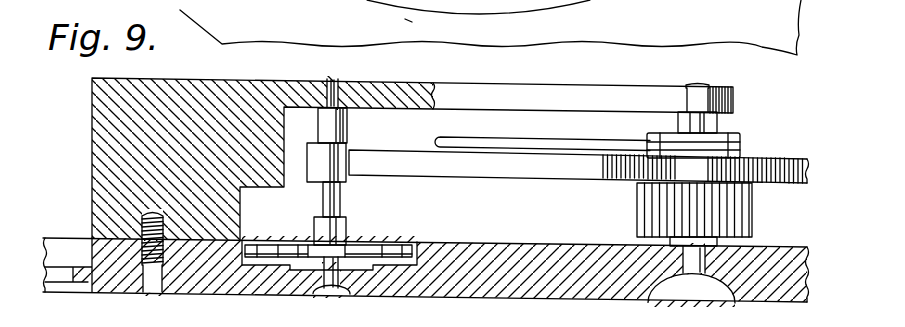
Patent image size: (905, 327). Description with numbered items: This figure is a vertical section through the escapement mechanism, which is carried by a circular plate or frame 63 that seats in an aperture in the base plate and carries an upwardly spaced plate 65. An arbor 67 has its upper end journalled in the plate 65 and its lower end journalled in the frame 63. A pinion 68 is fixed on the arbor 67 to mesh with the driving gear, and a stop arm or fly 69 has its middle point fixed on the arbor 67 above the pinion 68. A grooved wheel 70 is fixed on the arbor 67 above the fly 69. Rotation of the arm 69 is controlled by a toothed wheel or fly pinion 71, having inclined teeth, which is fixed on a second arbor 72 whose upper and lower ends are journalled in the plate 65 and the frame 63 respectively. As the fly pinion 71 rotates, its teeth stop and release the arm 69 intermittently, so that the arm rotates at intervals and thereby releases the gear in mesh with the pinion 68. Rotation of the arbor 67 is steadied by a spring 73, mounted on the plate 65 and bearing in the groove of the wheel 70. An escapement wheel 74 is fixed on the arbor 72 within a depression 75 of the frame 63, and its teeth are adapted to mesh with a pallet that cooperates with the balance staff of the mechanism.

The circular plate or frame 63 is at (590, 260).
The plate 65 is at (117, 112).
The arbor 67 is at (708, 128).
The pinion 68 is at (740, 213).
The stop arm or fly 69 is at (475, 167).
The grooved wheel 70 is at (747, 136).
The toothed wheel or fly pinion 71 is at (350, 148).
The arbor 72 is at (336, 186).
The spring 73 is at (583, 142).
The escapement wheel 74 is at (387, 255).
The depression 75 is at (402, 262).